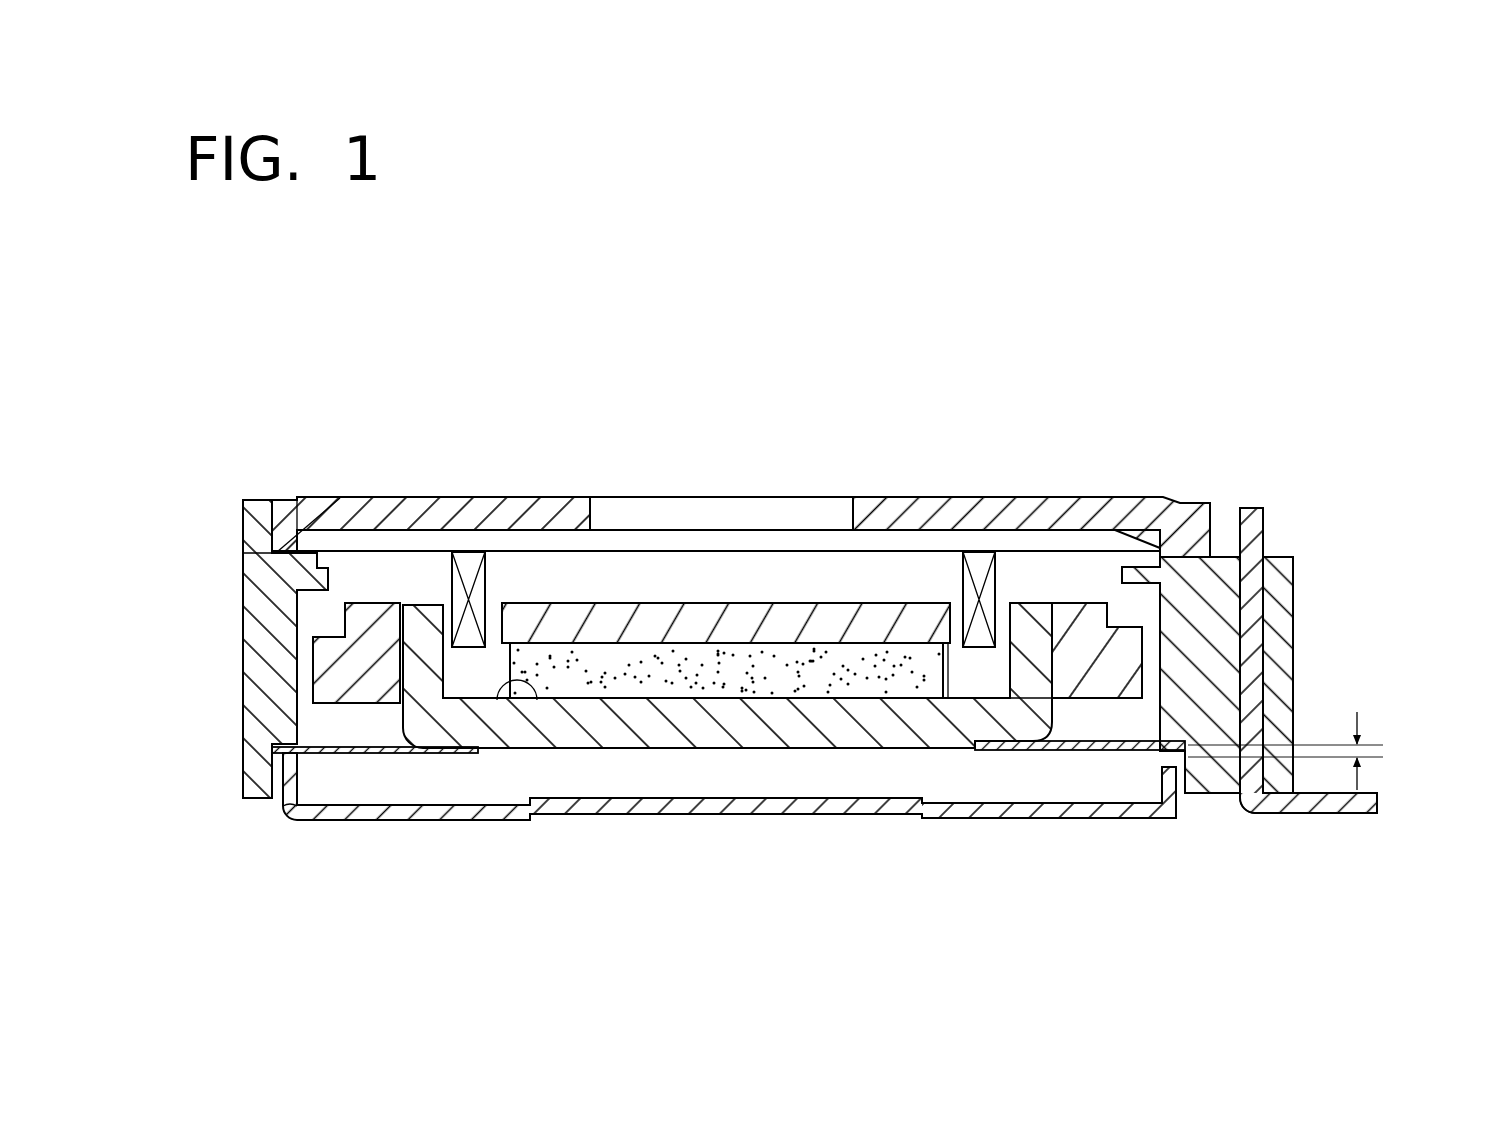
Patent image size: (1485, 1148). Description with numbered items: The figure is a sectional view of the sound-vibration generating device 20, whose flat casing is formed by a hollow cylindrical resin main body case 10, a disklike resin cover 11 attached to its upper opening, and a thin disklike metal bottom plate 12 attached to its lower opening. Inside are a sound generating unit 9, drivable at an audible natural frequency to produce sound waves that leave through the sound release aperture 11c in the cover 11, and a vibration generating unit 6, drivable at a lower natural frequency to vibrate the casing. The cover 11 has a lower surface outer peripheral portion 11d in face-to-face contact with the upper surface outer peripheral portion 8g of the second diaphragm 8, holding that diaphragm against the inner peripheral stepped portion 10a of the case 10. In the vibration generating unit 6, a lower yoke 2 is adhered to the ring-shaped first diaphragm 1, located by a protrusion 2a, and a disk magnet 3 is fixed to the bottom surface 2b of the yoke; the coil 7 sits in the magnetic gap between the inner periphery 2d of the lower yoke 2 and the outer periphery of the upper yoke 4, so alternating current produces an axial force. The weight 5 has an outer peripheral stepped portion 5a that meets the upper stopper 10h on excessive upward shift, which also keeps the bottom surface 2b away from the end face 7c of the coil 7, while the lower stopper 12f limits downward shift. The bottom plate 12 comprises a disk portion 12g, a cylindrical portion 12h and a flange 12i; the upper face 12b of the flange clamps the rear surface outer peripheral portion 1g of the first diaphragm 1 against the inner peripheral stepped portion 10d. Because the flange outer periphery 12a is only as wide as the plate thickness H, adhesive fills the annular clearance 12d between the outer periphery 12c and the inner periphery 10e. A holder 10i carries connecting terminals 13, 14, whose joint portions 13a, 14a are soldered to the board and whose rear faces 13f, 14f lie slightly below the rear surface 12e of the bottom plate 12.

The sound-vibration generating device 20 is at (953, 392).
The first diaphragm 1 is at (1040, 752).
The rear surface outer peripheral portion of the first diaphragm 1g is at (292, 760).
The lower yoke 2 is at (1032, 642).
The protrusion 2a is at (785, 750).
The bottom surface of the lower yoke 2b is at (536, 690).
The inner periphery of the lower yoke 2d is at (1003, 600).
The magnet 3 is at (878, 690).
The upper yoke 4 is at (822, 623).
The weight 5 is at (1085, 627).
The outer peripheral stepped portion of the weight 5a is at (333, 637).
The vibration generating unit 6 is at (897, 754).
The coil 7 is at (985, 553).
The end face of the coil 7c is at (469, 651).
The second diaphragm 8 is at (540, 551).
The upper surface outer peripheral portion of the second diaphragm 8g is at (296, 547).
The sound generating unit 9 is at (651, 549).
The main body case 10 is at (1183, 647).
The inner peripheral stepped portion of the main body case 10a is at (293, 546).
The inner peripheral stepped portion of the case 10d is at (287, 727).
The inner periphery of the main body case 10e is at (1178, 768).
The upper stopper 10h is at (320, 575).
The holder 10i is at (1277, 674).
The cover 11 is at (496, 506).
The sound release aperture 11c is at (767, 521).
The lower surface outer peripheral portion of the cover 11d is at (273, 563).
The bottom plate 12 is at (458, 820).
The flange outer periphery 12a is at (283, 754).
The upper face of the flange 12b is at (280, 748).
The outer periphery of the bottom plate 12c is at (285, 808).
The annular clearance 12d is at (1178, 816).
The rear surface of the bottom plate 12e is at (1122, 819).
The lower stopper 12f is at (676, 788).
The disk portion 12g is at (380, 821).
The cylindrical portion 12h is at (300, 815).
The flange 12i is at (285, 775).
The connecting terminal 13 is at (1257, 530).
The connecting terminal 14 is at (1308, 631).
The joint portion 13a is at (1360, 806).
The joint portion 14a is at (1390, 831).
The rear face of the terminal 13f is at (1300, 816).
The rear face of the terminal 14f is at (1300, 850).
The thickness of the thin plate H is at (1292, 747).